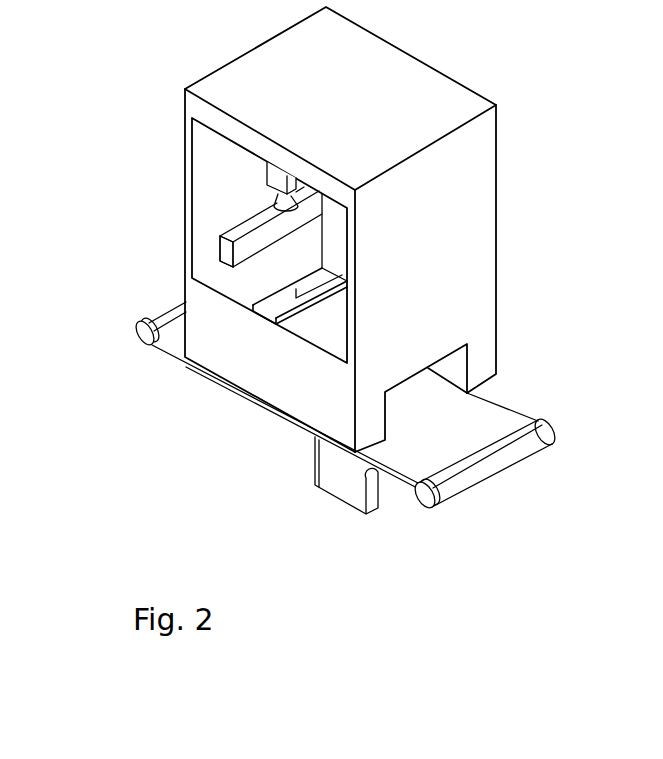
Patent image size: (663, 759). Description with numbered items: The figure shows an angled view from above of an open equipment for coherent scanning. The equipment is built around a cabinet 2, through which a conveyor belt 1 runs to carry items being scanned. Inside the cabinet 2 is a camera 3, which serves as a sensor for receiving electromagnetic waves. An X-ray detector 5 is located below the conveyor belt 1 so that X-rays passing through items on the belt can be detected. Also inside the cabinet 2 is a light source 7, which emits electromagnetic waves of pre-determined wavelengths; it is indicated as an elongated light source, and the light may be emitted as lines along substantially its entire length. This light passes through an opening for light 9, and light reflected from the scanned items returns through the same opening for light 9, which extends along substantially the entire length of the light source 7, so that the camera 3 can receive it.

The conveyor belt 1 is at (387, 458).
The cabinet 2 is at (354, 395).
The camera 3 is at (262, 172).
The X-ray detector 5 is at (321, 247).
The light source 7 is at (219, 247).
The opening for light 9 is at (262, 302).